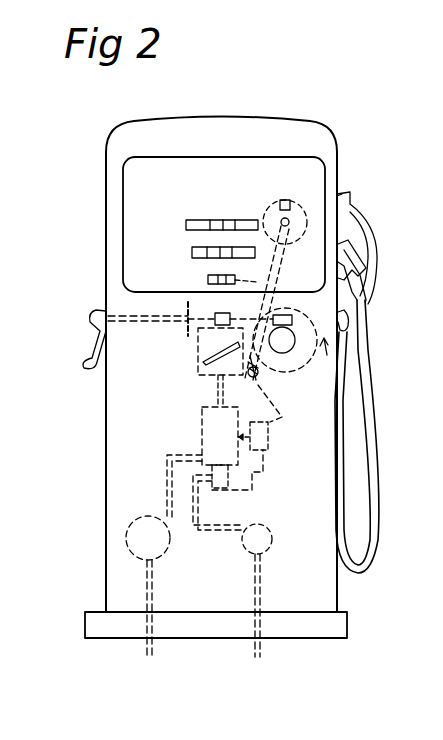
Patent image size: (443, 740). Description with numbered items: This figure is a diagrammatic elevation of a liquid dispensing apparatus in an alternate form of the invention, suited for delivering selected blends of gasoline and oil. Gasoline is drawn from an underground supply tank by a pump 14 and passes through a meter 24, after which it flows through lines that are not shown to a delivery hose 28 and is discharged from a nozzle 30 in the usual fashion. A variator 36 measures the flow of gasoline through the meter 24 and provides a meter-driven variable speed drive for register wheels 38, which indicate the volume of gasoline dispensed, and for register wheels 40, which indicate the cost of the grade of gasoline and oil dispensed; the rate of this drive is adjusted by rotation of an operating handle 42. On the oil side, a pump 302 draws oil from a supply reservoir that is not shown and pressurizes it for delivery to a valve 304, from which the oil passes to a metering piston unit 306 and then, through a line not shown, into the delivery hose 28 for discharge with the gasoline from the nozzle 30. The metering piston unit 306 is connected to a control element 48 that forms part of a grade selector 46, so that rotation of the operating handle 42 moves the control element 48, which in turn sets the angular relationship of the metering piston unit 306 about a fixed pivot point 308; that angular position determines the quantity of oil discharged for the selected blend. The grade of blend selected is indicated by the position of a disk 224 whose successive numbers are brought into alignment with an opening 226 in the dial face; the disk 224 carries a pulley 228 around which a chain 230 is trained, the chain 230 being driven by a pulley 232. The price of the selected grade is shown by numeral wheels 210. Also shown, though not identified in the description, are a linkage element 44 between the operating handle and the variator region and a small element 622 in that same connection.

The register wheels 40 is at (213, 218).
The register wheels 38 is at (212, 247).
The numeral wheels 210 is at (210, 276).
The disk 224 is at (268, 212).
The opening 226 is at (285, 200).
The pulley 228 is at (284, 245).
The chain 230 is at (281, 268).
The delivery hose 28 is at (369, 218).
The nozzle 30 is at (352, 260).
The operating handle 42 is at (90, 314).
The linkage rod 44 is at (165, 312).
The switch 622 is at (232, 312).
The variator 36 is at (198, 360).
The pulley 232 is at (262, 356).
The grade selector 46 is at (318, 358).
The control element 48 is at (268, 386).
The meter 24 is at (202, 440).
The fixed pivot point 308 is at (220, 447).
The metering piston unit 306 is at (268, 446).
The valve 304 is at (230, 492).
The pump 14 is at (168, 554).
The pump 302 is at (263, 553).